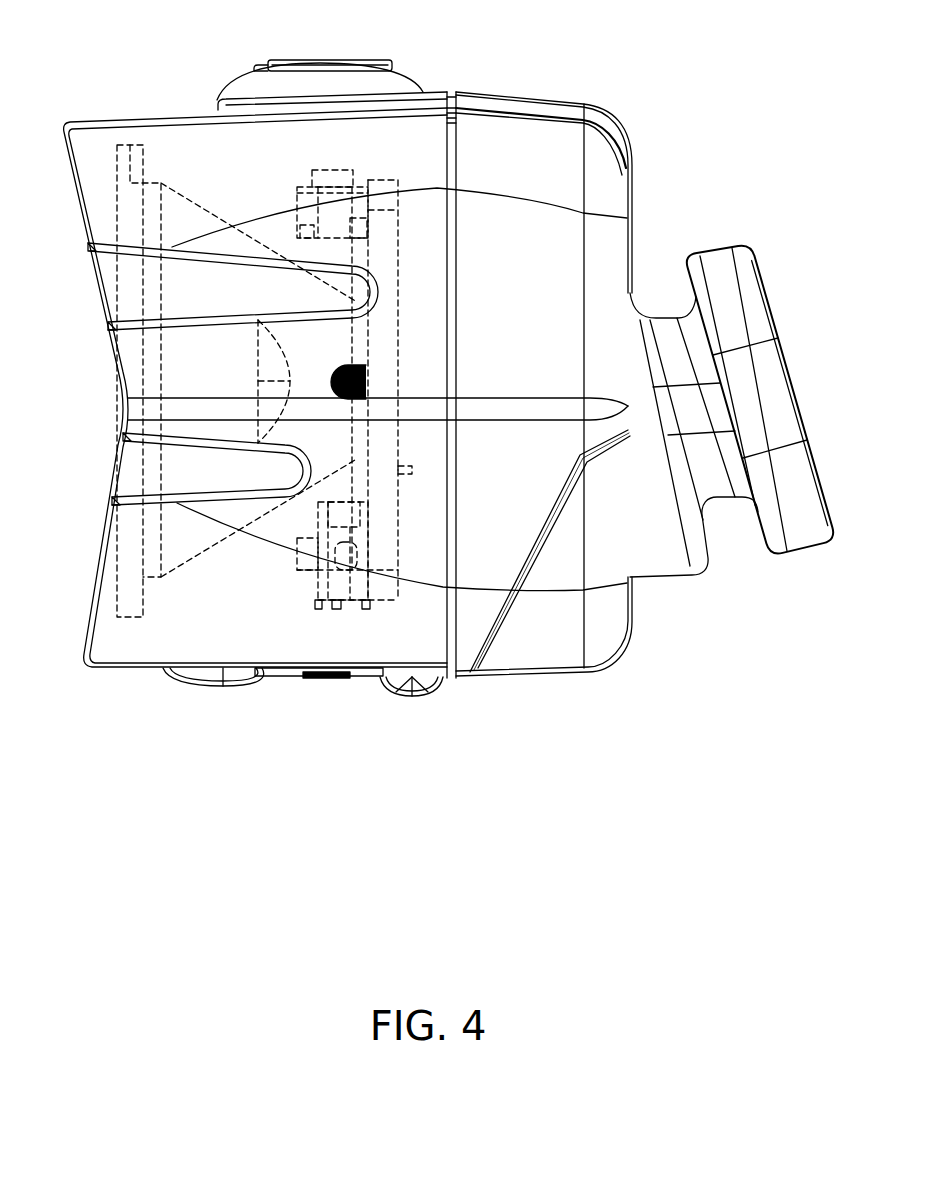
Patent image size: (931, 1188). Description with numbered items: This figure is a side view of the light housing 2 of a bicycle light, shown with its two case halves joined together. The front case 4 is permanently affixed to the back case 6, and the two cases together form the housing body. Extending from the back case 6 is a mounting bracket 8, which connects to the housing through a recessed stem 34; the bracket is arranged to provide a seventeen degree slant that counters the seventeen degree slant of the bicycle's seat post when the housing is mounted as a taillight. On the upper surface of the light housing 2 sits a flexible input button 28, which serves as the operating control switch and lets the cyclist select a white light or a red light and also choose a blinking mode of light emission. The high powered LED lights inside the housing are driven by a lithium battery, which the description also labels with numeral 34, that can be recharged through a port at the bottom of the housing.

The light housing 2 is at (370, 714).
The front case 4 is at (145, 110).
The back case 6 is at (512, 92).
The mounting bracket 8 is at (775, 308).
The flexible input button 28 is at (348, 62).
The recessed stem 34 is at (742, 562).